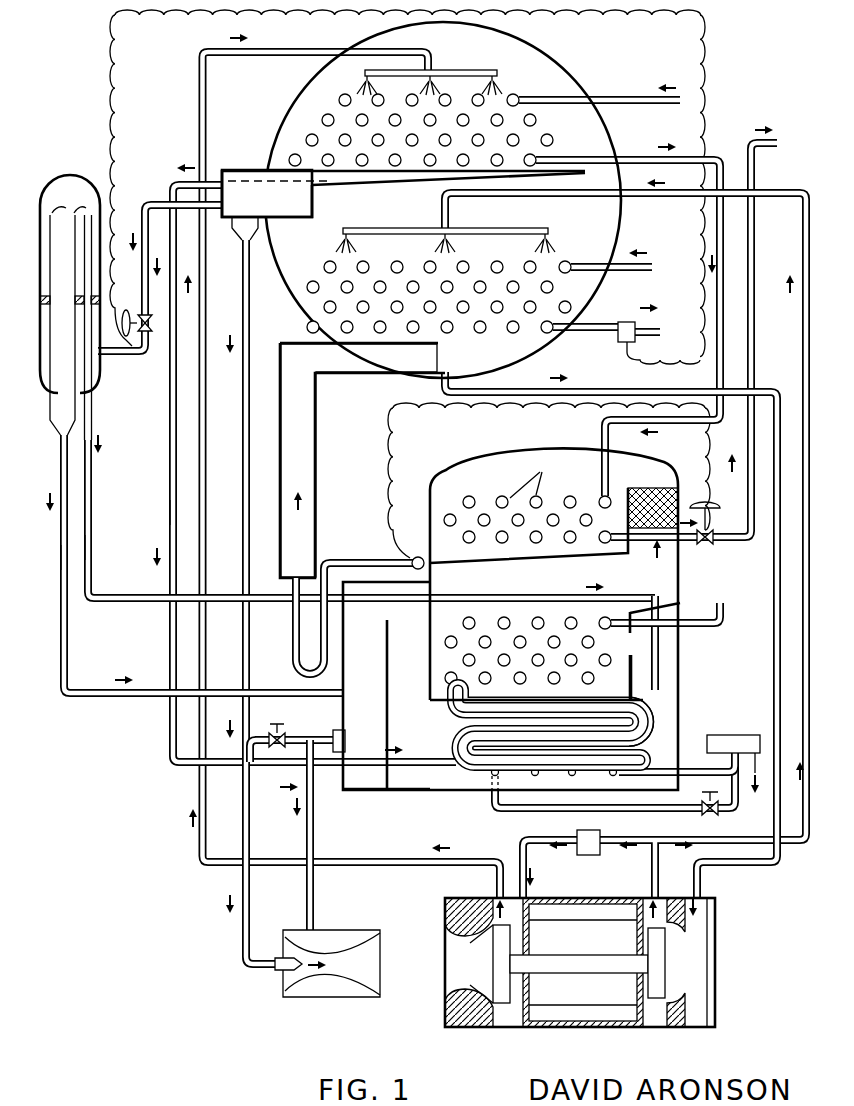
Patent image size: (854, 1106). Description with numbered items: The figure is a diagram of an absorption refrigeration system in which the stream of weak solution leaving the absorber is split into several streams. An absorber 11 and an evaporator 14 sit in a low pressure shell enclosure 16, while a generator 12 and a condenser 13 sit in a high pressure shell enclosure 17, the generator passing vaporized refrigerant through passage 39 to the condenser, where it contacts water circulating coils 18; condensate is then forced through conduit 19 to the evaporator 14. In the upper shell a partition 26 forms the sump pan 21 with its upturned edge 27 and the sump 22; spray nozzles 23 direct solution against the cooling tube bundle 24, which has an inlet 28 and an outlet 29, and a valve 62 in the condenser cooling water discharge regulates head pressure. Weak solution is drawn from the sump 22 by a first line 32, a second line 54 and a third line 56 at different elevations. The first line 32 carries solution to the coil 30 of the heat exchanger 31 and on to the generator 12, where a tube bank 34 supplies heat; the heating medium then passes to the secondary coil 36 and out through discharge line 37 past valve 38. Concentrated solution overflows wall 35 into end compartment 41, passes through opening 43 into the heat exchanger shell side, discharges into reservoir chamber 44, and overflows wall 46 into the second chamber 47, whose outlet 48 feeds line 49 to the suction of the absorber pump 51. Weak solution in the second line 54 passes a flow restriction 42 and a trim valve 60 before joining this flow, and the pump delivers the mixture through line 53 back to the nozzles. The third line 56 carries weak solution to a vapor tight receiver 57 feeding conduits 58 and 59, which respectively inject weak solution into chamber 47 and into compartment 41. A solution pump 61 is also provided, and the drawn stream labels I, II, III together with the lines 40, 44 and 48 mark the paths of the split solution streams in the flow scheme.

The absorber 11 is at (320, 99).
The generator 12 is at (446, 623).
The condenser 13 is at (458, 478).
The evaporator 14 is at (606, 225).
The low pressure shell enclosure 16 is at (360, 45).
The high pressure shell enclosure 17 is at (681, 596).
The water circulating coils 18 is at (531, 475).
The conduit 19 is at (318, 481).
The sump pan 21 is at (328, 185).
The sump 22 is at (247, 200).
The spray trees or nozzles 23 is at (444, 70).
The cooling coil or tube bundle 24 is at (462, 112).
The partition 26 is at (420, 189).
The upturned edge 27 is at (522, 96).
The inlet 28 is at (606, 97).
The outlet 29 is at (630, 157).
The coil 30 is at (450, 742).
The heat exchanger 31 is at (668, 725).
The first line 32 is at (168, 418).
The tube bank 34 is at (534, 627).
The wall 35 is at (632, 678).
The secondary heat exchanger coil 36 is at (614, 769).
The discharge line 37 is at (492, 806).
The valve 38 is at (700, 813).
The passage 39 is at (660, 487).
The supply pipe 40 is at (316, 829).
The end compartment 41 is at (650, 670).
The flow restriction 42 is at (298, 976).
The opening 43 is at (652, 697).
The reservoir chamber 44 is at (412, 770).
The wall 46 is at (386, 675).
The second chamber 47 is at (341, 717).
The outlet 48 is at (345, 743).
The line 49 is at (316, 912).
The absorber pump 51 is at (480, 964).
The line 53 is at (207, 466).
The second line 54 is at (250, 318).
The third line 56 is at (148, 212).
The receiver 57 is at (104, 380).
The conduit 58 is at (60, 458).
The conduit 59 is at (92, 488).
The trim valve 60 is at (276, 727).
The solution pump 61 is at (682, 968).
The valve 62 is at (718, 546).
The stream I is at (170, 522).
The stream II is at (90, 546).
The stream III is at (62, 560).